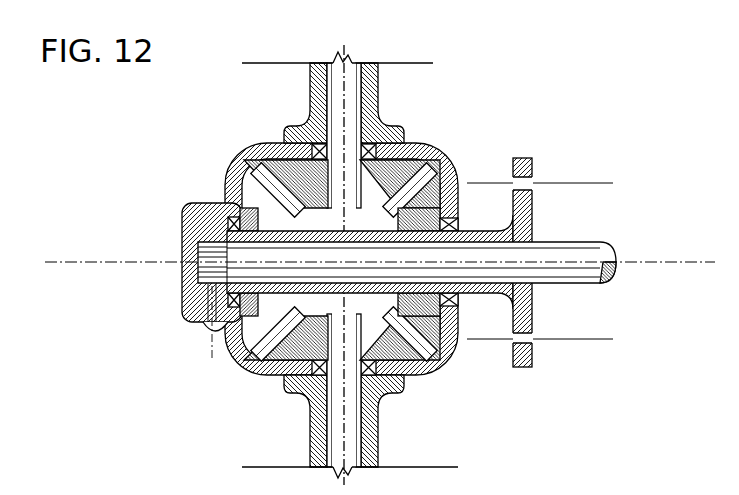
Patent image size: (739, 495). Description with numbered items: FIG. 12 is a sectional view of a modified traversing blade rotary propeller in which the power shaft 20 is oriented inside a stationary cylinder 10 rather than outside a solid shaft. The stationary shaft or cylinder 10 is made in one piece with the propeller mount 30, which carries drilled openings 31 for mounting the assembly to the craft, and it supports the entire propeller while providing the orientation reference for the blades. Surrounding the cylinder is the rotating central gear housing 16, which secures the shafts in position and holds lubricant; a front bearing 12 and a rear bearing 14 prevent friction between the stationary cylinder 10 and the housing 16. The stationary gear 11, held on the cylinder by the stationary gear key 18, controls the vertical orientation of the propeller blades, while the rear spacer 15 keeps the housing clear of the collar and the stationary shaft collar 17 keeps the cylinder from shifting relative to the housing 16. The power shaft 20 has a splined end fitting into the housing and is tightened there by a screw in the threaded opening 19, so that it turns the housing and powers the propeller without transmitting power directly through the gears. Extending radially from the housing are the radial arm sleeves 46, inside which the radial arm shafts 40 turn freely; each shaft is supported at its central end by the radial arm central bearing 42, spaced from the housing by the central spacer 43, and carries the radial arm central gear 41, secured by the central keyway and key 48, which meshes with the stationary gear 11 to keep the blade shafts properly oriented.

The stationary shaft or cylinder 10 is at (500, 231).
The stationary gear 11 is at (419, 304).
The stationary shaft front bearing 12 is at (458, 301).
The stationary shaft rear bearing 14 is at (225, 222).
The stationary shaft rear spacer 15 is at (245, 208).
The central gear housing 16 is at (240, 160).
The stationary shaft collar 17 is at (258, 303).
The stationary gear keyway and key 18 is at (419, 219).
The threaded opening with screw 19 is at (203, 322).
The power shaft or cylinder 20 is at (606, 248).
The propeller mount 30 is at (533, 160).
The drilled opening 31 is at (535, 188).
The radial arm shaft 40 is at (335, 60).
The radial arm central gear 41 is at (286, 260).
The radial arm central bearing 42 is at (334, 140).
The radial arm central spacer 43 is at (342, 265).
The radial arm sleeve 46 is at (378, 78).
The radial arm central keyway with key 48 is at (400, 260).